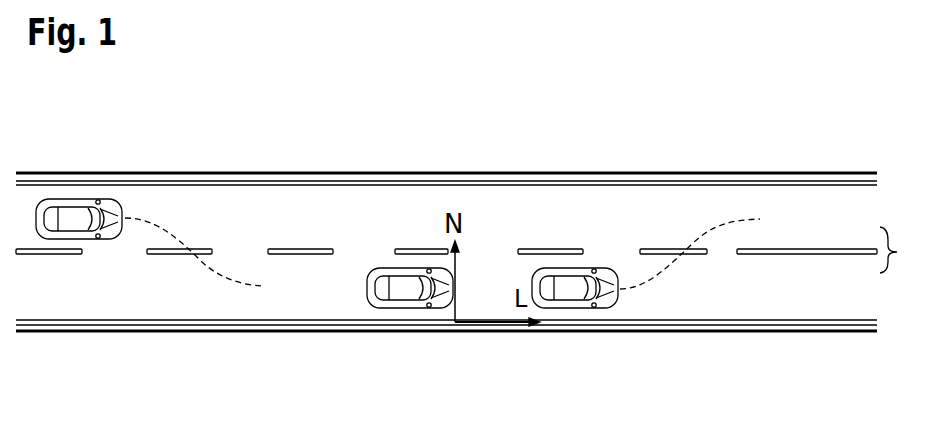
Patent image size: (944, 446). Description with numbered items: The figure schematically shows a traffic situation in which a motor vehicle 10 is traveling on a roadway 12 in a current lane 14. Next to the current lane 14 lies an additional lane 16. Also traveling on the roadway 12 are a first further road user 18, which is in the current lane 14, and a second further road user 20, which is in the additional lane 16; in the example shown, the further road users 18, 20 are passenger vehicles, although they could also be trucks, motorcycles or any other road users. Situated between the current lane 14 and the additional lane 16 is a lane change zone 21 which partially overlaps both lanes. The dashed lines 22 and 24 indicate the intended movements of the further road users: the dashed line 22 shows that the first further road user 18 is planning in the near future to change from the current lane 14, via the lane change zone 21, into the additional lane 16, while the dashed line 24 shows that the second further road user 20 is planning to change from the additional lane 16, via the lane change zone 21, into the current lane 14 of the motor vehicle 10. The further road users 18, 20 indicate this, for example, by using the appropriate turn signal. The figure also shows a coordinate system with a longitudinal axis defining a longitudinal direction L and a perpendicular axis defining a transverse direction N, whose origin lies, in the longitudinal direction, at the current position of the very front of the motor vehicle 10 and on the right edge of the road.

The motor vehicle 10 is at (403, 293).
The roadway 12 is at (295, 173).
The current lane 14 is at (817, 302).
The additional lane 16 is at (817, 200).
The first further road user 18 is at (570, 293).
The second further road user 20 is at (75, 220).
The lane change zone 21 is at (898, 254).
The dashed line 22 is at (733, 220).
The dashed line 24 is at (157, 218).